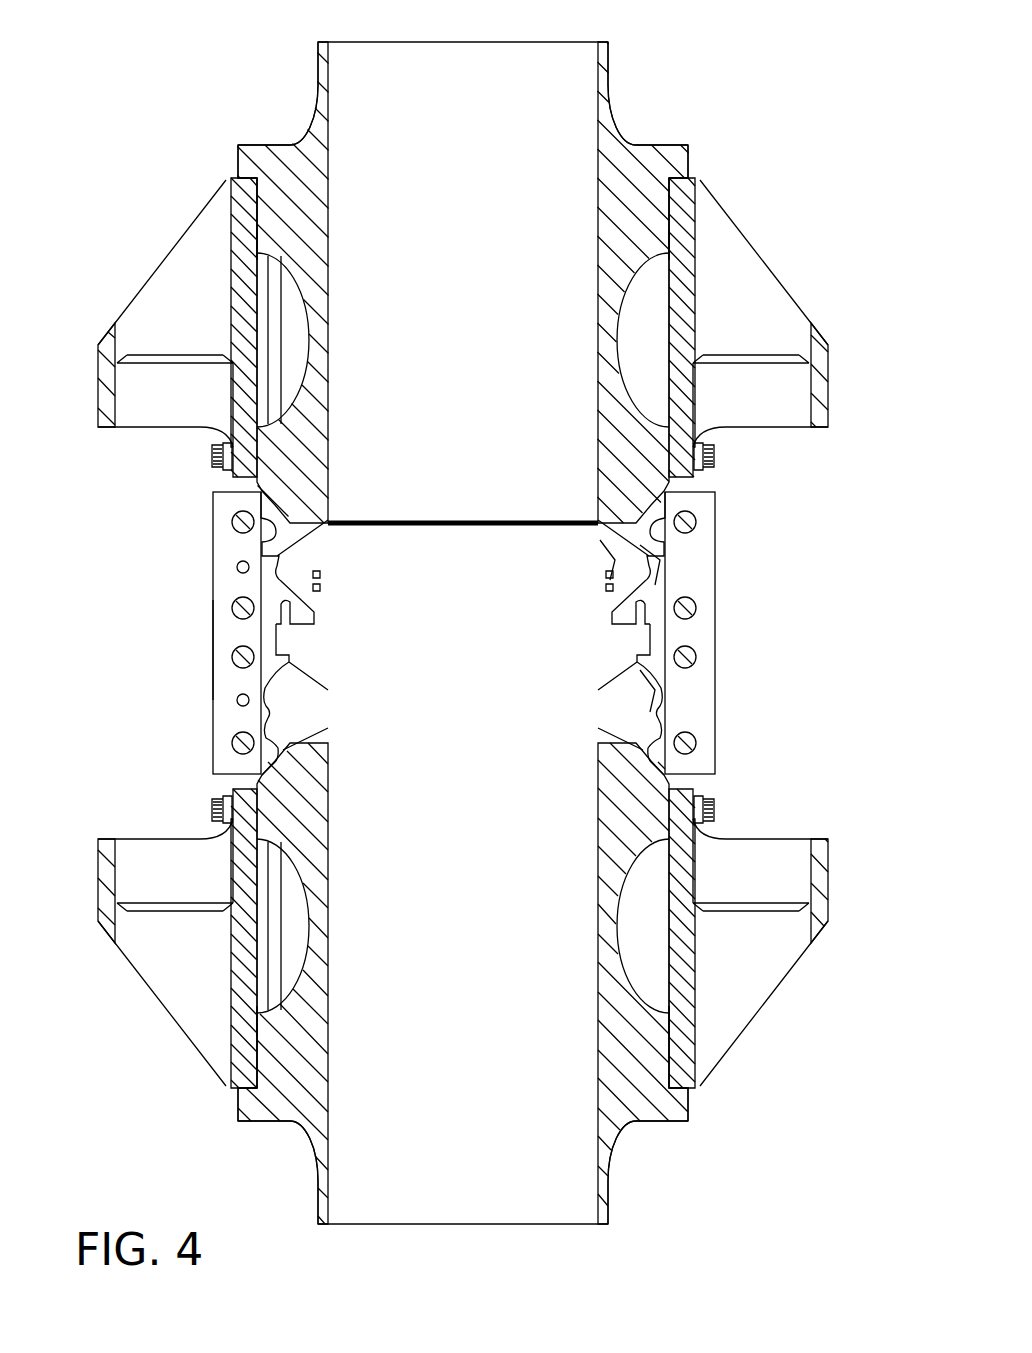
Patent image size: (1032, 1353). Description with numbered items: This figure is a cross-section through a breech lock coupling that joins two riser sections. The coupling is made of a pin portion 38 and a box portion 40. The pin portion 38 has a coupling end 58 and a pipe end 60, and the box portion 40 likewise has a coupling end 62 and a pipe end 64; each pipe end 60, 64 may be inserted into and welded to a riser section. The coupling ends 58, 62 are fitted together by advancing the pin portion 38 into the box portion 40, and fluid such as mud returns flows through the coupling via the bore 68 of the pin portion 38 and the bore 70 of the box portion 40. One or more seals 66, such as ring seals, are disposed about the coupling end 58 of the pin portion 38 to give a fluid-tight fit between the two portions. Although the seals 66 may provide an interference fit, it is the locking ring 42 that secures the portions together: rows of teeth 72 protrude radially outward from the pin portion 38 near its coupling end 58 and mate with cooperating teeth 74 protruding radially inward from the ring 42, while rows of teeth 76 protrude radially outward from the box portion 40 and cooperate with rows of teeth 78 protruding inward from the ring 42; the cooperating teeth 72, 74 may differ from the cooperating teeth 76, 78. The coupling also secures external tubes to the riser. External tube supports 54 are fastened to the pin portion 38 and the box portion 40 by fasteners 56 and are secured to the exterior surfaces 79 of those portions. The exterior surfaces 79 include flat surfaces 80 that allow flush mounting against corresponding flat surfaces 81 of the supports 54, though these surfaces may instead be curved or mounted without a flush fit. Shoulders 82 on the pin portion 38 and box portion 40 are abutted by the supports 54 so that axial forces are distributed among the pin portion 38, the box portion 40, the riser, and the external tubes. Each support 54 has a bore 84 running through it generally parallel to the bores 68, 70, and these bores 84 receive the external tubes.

The pin portion 38 is at (495, 1005).
The box portion 40 is at (483, 262).
The locking ring 42 is at (722, 613).
The external tube support 54 is at (100, 387).
The fastener 56 is at (212, 455).
The coupling end 58 is at (278, 553).
The pipe end 60 is at (318, 1192).
The coupling end 62 is at (275, 617).
The pipe end 64 is at (318, 73).
The seal 66 is at (652, 590).
The bore 68 is at (562, 1225).
The bore 70 is at (548, 43).
The teeth 72 is at (660, 712).
The cooperating teeth 74 is at (295, 738).
The teeth 76 is at (652, 586).
The teeth 78 is at (272, 520).
The exterior surface 79 is at (248, 243).
The flat surface 80 is at (215, 192).
The flat surface 81 is at (258, 240).
The shoulder 82 is at (238, 158).
The bore 84 is at (146, 304).